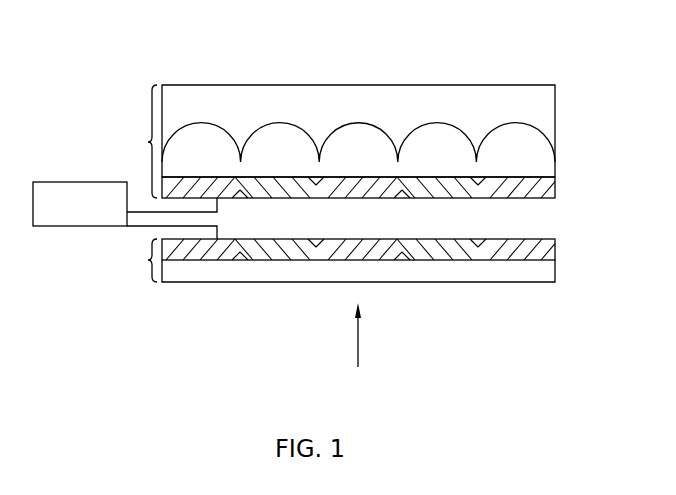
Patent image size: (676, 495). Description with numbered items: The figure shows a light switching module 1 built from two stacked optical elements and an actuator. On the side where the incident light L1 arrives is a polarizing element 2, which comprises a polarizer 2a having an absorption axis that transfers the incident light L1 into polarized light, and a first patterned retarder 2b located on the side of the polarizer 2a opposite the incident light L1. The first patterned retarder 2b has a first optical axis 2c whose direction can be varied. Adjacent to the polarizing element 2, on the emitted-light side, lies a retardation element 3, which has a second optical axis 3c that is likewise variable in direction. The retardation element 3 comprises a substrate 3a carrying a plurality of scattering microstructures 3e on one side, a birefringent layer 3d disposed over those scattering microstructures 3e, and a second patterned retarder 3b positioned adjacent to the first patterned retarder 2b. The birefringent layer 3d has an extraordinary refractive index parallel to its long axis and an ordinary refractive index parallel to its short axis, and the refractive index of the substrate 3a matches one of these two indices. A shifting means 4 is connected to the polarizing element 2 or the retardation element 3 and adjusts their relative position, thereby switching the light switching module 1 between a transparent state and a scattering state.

The light switching module 1 is at (134, 46).
The polarizing element 2 is at (146, 260).
The polarizer 2a is at (545, 276).
The first patterned retarder 2b is at (548, 254).
The first optical axis 2c is at (522, 242).
The retardation element 3 is at (146, 141).
The substrate 3a is at (542, 116).
The second patterned retarder 3b is at (548, 191).
The second optical axis 3c is at (512, 191).
The birefringent layer 3d is at (545, 167).
The scattering microstructures 3e is at (463, 108).
The shifting means 4 is at (80, 227).
The incident light L1 is at (373, 335).